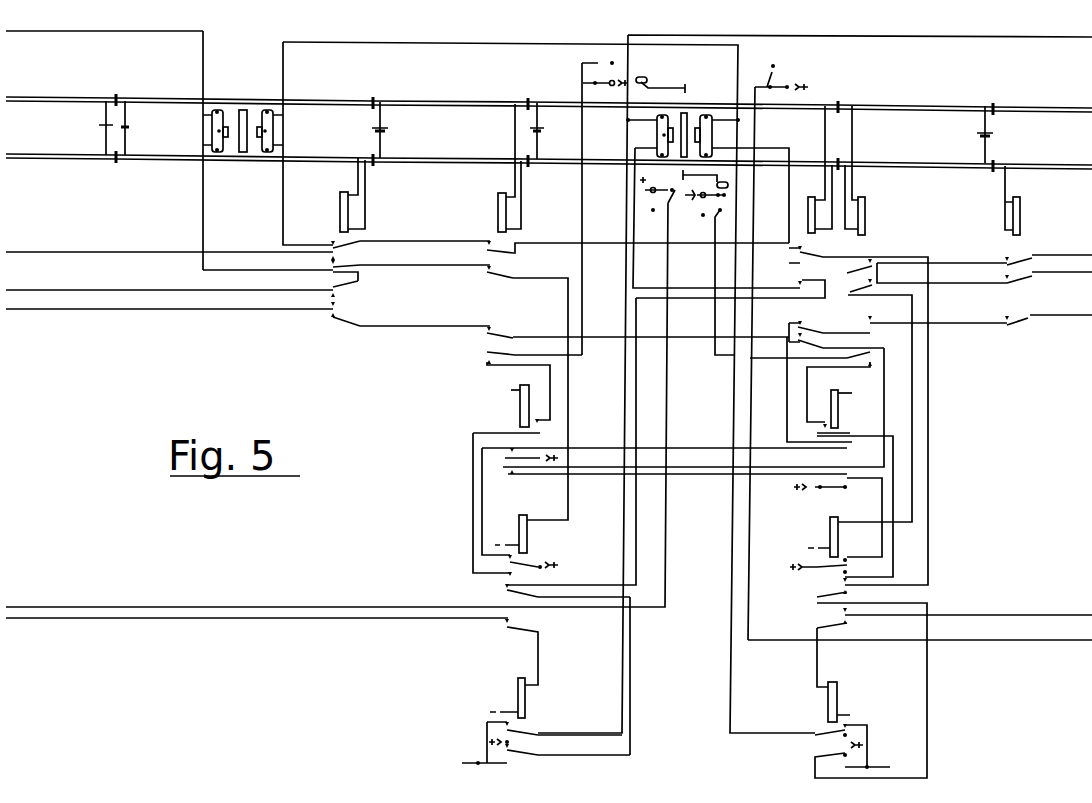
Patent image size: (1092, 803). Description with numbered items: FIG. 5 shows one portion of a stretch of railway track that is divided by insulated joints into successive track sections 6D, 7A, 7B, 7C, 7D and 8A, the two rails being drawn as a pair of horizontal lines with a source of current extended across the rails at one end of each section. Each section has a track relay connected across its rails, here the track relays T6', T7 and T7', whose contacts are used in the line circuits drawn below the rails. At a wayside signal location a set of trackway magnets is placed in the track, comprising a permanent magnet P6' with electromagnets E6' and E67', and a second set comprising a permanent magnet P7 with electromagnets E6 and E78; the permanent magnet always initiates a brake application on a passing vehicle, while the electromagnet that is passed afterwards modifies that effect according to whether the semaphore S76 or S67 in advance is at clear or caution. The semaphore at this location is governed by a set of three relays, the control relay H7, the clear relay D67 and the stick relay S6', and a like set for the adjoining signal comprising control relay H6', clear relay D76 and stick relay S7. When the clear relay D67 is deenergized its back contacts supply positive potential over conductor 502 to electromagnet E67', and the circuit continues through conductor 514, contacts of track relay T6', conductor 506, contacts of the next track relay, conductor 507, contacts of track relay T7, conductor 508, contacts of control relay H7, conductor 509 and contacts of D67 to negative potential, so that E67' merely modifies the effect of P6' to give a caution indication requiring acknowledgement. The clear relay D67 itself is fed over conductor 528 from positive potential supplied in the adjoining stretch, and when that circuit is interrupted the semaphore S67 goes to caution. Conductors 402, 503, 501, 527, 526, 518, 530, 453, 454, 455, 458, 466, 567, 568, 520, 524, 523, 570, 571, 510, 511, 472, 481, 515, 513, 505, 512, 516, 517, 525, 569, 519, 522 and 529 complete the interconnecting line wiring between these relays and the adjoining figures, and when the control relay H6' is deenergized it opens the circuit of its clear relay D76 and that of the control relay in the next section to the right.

The conductor 402 is at (54, 33).
The conductor 503 is at (204, 195).
The conductor 514 is at (284, 193).
The conductor 502 is at (464, 39).
The conductor 501 is at (897, 36).
The track section 6D is at (61, 128).
The track section 7A is at (244, 130).
The track section 7B is at (450, 132).
The track section 7C is at (683, 134).
The track section 7D is at (915, 136).
The track section 8A is at (1042, 138).
The electromagnet E6' is at (215, 118).
The permanent magnet P6' is at (240, 109).
The electromagnet E67' is at (268, 118).
The electromagnet E6 is at (649, 124).
The permanent magnet P7 is at (688, 112).
The electromagnet E78 is at (708, 113).
The semaphore S76 is at (660, 79).
The semaphore S67 is at (707, 180).
The conductor 527 is at (716, 276).
The conductor 526 is at (583, 187).
The conductor 518 is at (749, 506).
The conductor 530 is at (1028, 645).
The track relay T6' is at (333, 195).
The track relay T7 is at (812, 169).
The track relay T7' is at (868, 170).
The conductor 453 is at (56, 255).
The conductor 506 is at (424, 243).
The conductor 507 is at (562, 244).
The conductor 454 is at (427, 266).
The conductor 455 is at (479, 280).
The conductor 458 is at (56, 293).
The conductor 466 is at (26, 312).
The conductor 567 is at (427, 326).
The conductor 568 is at (556, 338).
The contact 520 is at (521, 367).
The stick relay S7 is at (513, 406).
The conductor 524 is at (473, 500).
The conductor 523 is at (711, 451).
The conductor 570 is at (711, 470).
The conductor 571 is at (883, 506).
The control relay H6' is at (526, 542).
The conductor 510 is at (635, 281).
The conductor 511 is at (636, 395).
The conductor 472 is at (58, 603).
The conductor 481 is at (31, 622).
The clear relay D76 is at (546, 721).
The conductor 515 is at (631, 638).
The conductor 508 is at (901, 259).
The conductor 513 is at (986, 264).
The conductor 505 is at (1085, 257).
The conductor 512 is at (1081, 278).
The contact 516 is at (952, 278).
The conductor 517 is at (912, 309).
The conductor 525 is at (1080, 320).
The conductor 569 is at (874, 348).
The contact 519 is at (819, 366).
The stick relay S6' is at (849, 409).
The conductor 522 is at (787, 402).
The conductor 529 is at (900, 449).
The control relay H7 is at (826, 545).
The conductor 509 is at (929, 608).
The conductor 528 is at (1069, 613).
The clear relay D67 is at (853, 698).